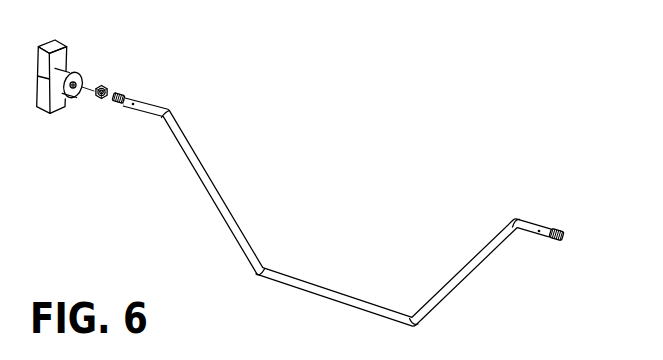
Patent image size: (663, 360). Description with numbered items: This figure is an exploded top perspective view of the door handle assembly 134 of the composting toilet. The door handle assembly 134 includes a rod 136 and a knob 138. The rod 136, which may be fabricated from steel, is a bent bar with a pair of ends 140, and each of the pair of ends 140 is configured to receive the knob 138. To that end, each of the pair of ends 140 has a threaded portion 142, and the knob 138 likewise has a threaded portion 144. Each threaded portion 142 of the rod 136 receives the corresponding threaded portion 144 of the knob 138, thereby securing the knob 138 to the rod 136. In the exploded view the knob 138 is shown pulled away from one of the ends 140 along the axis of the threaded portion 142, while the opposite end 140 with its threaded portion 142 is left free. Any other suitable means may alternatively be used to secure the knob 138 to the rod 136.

The door handle assembly 134 is at (535, 136).
The rod 136 is at (403, 314).
The knob 138 is at (43, 111).
The pair of ends 140 is at (363, 138).
The threaded portion 142 is at (122, 96).
The threaded portion 144 is at (81, 72).